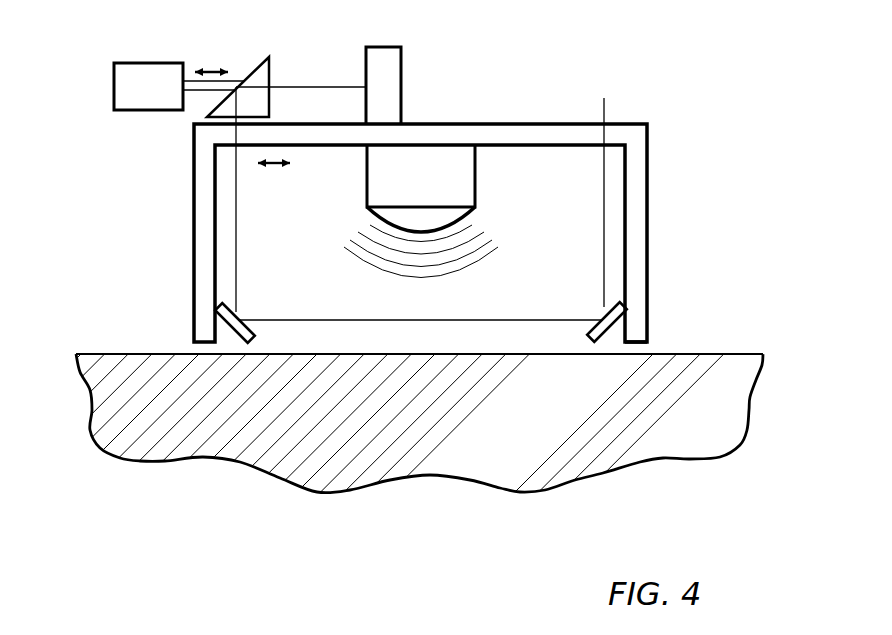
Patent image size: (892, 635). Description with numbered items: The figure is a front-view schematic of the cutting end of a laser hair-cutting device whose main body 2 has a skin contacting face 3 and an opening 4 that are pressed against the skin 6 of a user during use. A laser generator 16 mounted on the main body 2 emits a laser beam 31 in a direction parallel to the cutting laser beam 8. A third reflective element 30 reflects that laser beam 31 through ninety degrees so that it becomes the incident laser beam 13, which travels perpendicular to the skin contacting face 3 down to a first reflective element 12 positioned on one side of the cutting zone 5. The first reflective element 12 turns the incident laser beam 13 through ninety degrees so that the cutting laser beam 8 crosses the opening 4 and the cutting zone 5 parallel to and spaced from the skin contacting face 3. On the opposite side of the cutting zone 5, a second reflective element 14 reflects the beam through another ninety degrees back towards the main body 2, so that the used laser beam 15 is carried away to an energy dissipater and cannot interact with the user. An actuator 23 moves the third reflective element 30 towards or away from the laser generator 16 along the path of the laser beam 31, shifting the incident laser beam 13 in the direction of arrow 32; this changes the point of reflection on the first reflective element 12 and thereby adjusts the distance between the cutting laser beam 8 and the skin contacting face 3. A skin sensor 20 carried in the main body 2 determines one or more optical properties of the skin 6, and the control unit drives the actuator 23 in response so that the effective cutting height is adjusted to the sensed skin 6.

The main body 2 is at (642, 157).
The skin contacting face 3 is at (636, 343).
The opening 4 is at (510, 343).
The cutting zone 5 is at (413, 314).
The skin 6 is at (643, 447).
The cutting laser beam 8 is at (522, 318).
The first reflective element 12 is at (223, 310).
The incident laser beam 13 is at (237, 243).
The second reflective element 14 is at (615, 306).
The used laser beam 15 is at (603, 243).
The laser generator 16 is at (394, 62).
The skin sensor 20 is at (468, 177).
The actuator 23 is at (148, 70).
The third reflective element 30 is at (256, 70).
The laser beam 31 is at (336, 84).
The arrow 32 is at (275, 170).